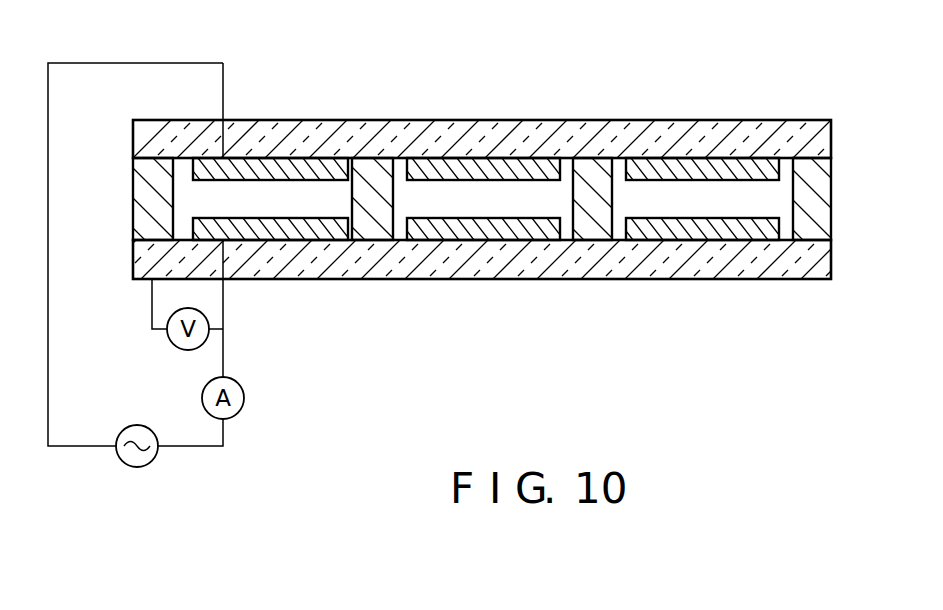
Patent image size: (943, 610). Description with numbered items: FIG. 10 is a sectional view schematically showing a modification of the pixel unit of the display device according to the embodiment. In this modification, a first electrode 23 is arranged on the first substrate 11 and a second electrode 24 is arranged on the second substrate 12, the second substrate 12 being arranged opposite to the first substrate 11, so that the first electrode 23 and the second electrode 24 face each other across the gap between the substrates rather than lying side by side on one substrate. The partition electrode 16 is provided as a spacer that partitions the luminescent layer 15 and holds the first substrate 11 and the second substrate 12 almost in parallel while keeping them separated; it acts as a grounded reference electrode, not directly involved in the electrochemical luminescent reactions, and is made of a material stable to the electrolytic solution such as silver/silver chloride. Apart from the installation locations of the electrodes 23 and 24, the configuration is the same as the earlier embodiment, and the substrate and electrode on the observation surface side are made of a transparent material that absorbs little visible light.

The first substrate 11 is at (802, 257).
The second substrate 12 is at (727, 138).
The luminescent layer 15 is at (242, 197).
The partition electrode 16 is at (155, 170).
The first electrode 23 is at (280, 232).
The second electrode 24 is at (304, 170).